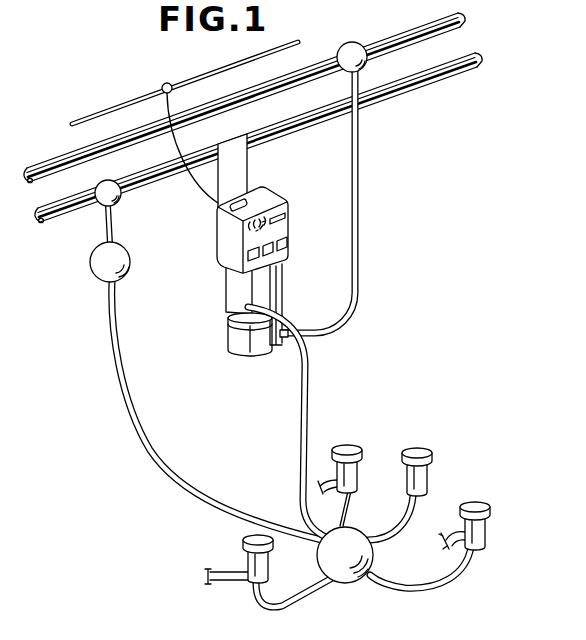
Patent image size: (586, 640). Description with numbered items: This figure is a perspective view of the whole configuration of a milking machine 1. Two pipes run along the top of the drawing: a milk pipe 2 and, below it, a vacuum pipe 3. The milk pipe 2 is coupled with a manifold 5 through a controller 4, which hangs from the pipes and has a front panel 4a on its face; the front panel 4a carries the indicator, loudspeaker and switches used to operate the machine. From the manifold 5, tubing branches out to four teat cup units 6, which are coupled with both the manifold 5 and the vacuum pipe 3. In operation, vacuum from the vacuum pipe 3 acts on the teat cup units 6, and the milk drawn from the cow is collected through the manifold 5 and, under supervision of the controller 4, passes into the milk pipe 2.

The dispensing apparatus 1 is at (278, 310).
The milk pipe 2 is at (455, 32).
The vacuum pipe 3 is at (458, 83).
The controller 4 is at (279, 362).
The front panel 4a is at (289, 233).
The manifold 5 is at (378, 560).
The teat cup units 6 is at (362, 451).